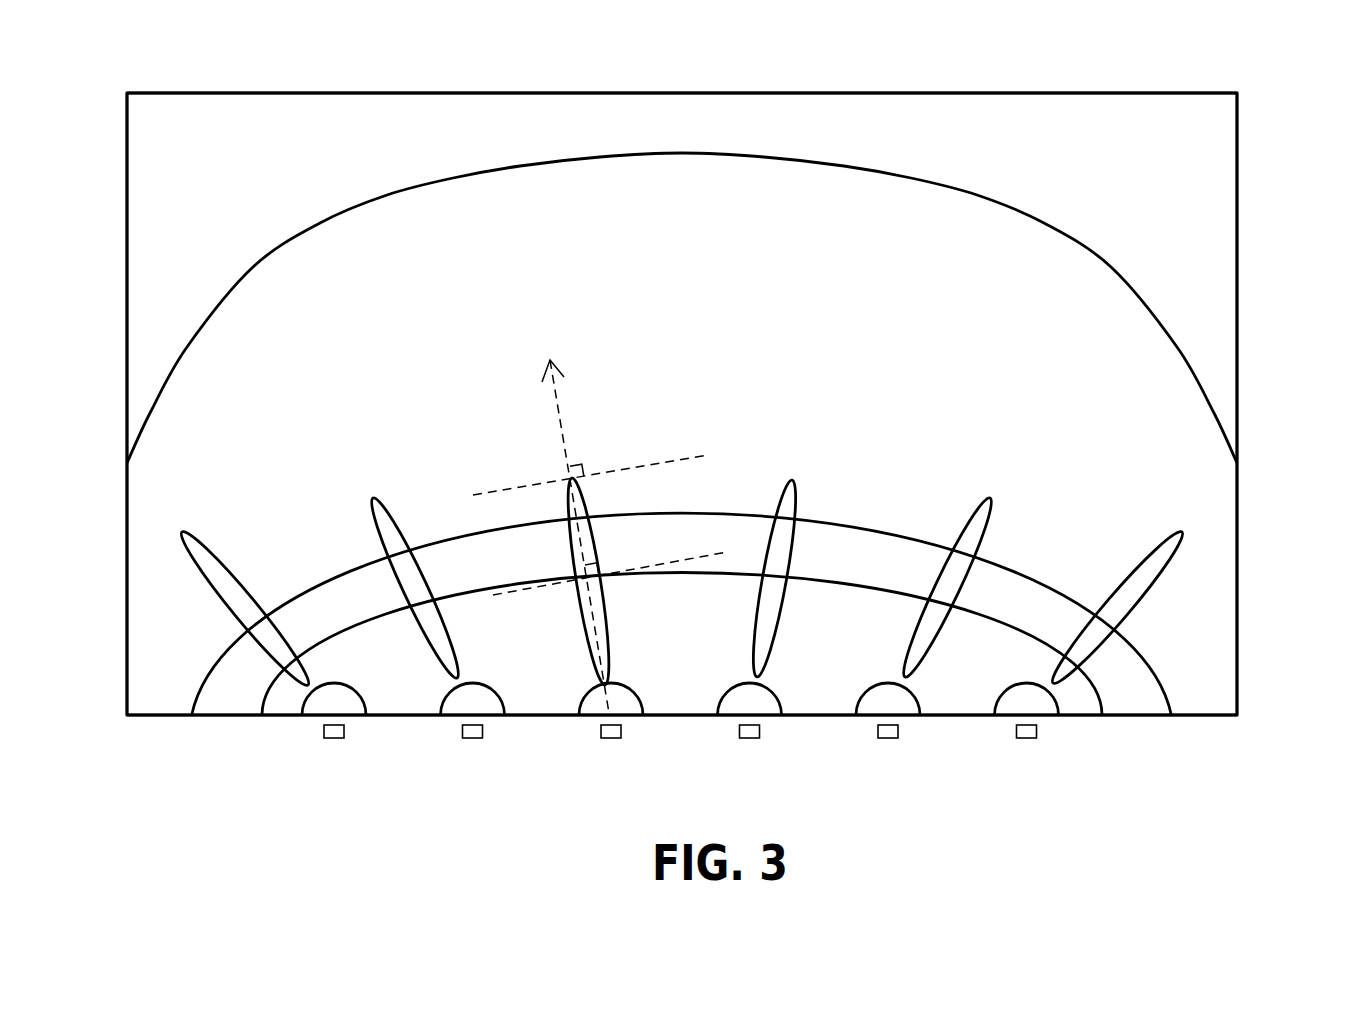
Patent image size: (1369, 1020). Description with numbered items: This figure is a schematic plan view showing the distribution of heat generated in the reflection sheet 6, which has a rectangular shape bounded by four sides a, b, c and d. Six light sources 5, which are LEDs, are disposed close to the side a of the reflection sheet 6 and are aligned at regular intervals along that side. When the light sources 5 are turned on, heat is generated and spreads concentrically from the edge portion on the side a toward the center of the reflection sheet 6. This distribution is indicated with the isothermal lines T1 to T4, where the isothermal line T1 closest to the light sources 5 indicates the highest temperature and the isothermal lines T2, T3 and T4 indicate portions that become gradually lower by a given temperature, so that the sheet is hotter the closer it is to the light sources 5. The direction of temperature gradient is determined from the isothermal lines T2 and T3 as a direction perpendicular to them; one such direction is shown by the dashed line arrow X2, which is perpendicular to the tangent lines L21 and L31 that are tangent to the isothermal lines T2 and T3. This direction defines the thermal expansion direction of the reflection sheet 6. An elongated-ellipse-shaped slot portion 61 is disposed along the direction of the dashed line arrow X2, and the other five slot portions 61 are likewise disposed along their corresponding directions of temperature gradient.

The reflection sheet 6 is at (1239, 218).
The slot portion 61 is at (185, 530).
The light source 5 is at (334, 738).
The isothermal line T1 is at (302, 705).
The isothermal line T2 is at (873, 575).
The isothermal line T3 is at (897, 490).
The isothermal line T4 is at (1045, 225).
The tangent line L21 is at (695, 555).
The tangent line L31 is at (695, 457).
The dashed line arrow X2 is at (560, 412).
The side a is at (1146, 718).
The side b is at (999, 91).
The side c is at (1239, 563).
The side d is at (125, 281).